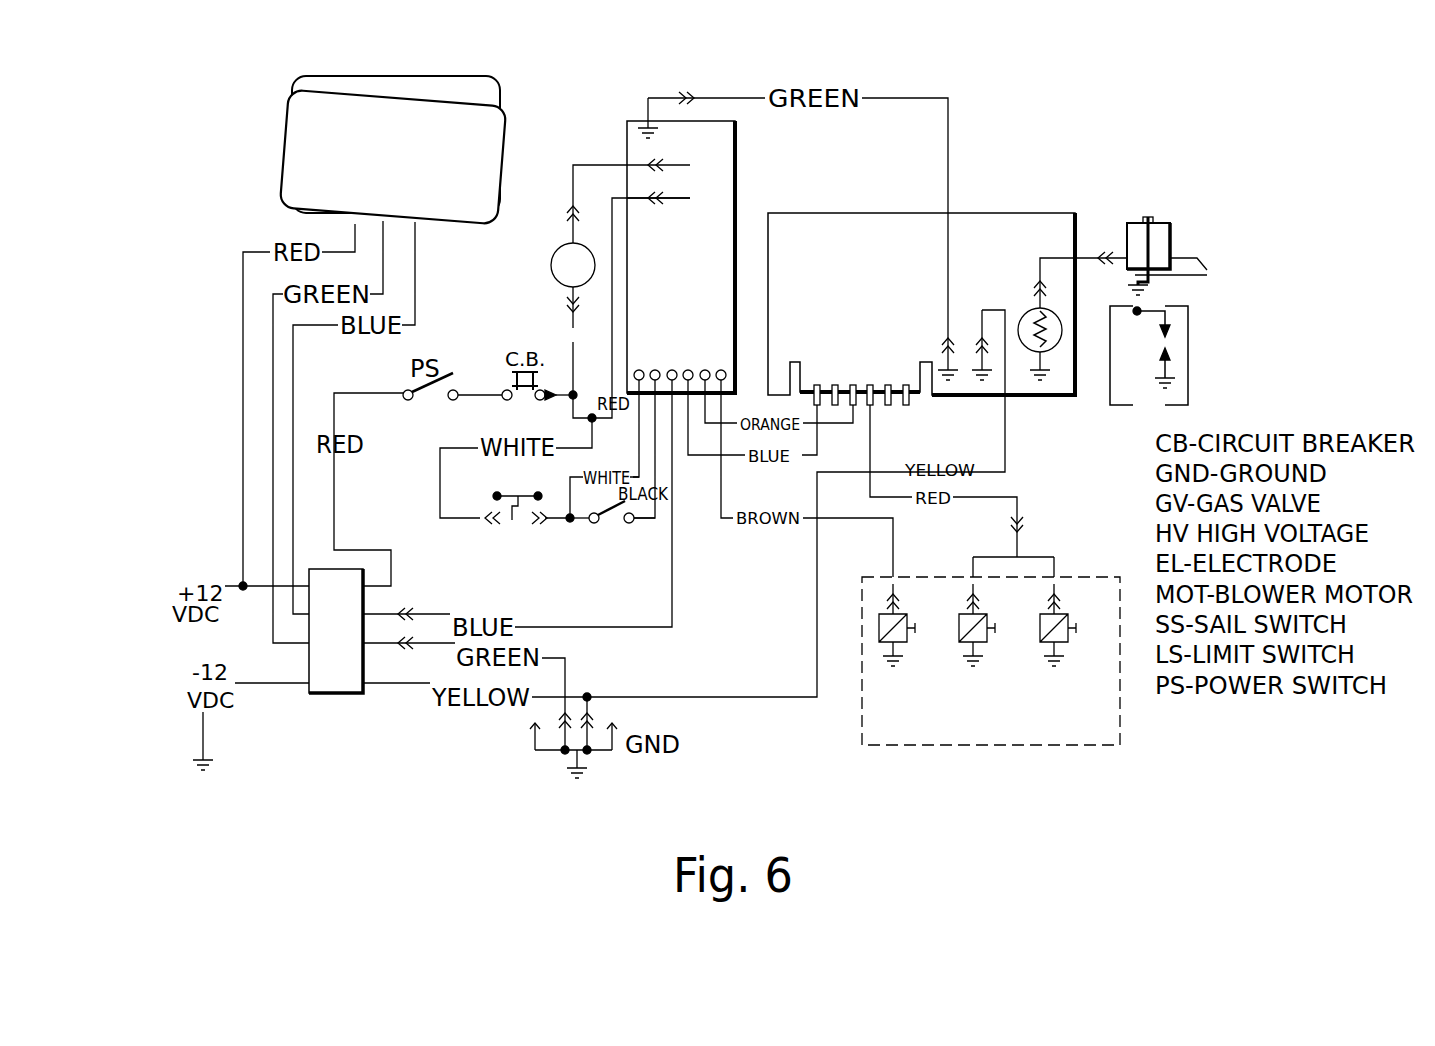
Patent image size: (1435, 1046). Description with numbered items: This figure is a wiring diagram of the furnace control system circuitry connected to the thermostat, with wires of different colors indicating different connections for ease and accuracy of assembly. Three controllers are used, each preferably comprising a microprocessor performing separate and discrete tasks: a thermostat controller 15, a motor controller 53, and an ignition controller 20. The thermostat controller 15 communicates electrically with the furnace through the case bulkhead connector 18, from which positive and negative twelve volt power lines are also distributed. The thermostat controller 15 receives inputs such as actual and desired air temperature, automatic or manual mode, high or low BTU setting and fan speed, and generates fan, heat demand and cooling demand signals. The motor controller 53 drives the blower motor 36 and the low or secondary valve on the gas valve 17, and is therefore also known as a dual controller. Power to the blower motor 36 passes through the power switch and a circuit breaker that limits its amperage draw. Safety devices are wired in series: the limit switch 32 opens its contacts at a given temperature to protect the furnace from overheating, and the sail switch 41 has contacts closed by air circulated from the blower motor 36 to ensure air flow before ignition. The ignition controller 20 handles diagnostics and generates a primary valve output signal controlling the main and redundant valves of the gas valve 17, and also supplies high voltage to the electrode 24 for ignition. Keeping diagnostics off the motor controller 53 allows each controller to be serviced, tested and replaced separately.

The thermostat controller 15 is at (485, 123).
The motor controller 53 is at (728, 192).
The ignition controller 20 is at (985, 222).
The electrode 24 is at (1165, 232).
The blower motor 36 is at (550, 265).
The limit switch 32 is at (500, 493).
The sail switch 41 is at (605, 527).
The case bulkhead connector 18 is at (330, 695).
The gas valve 17 is at (912, 745).